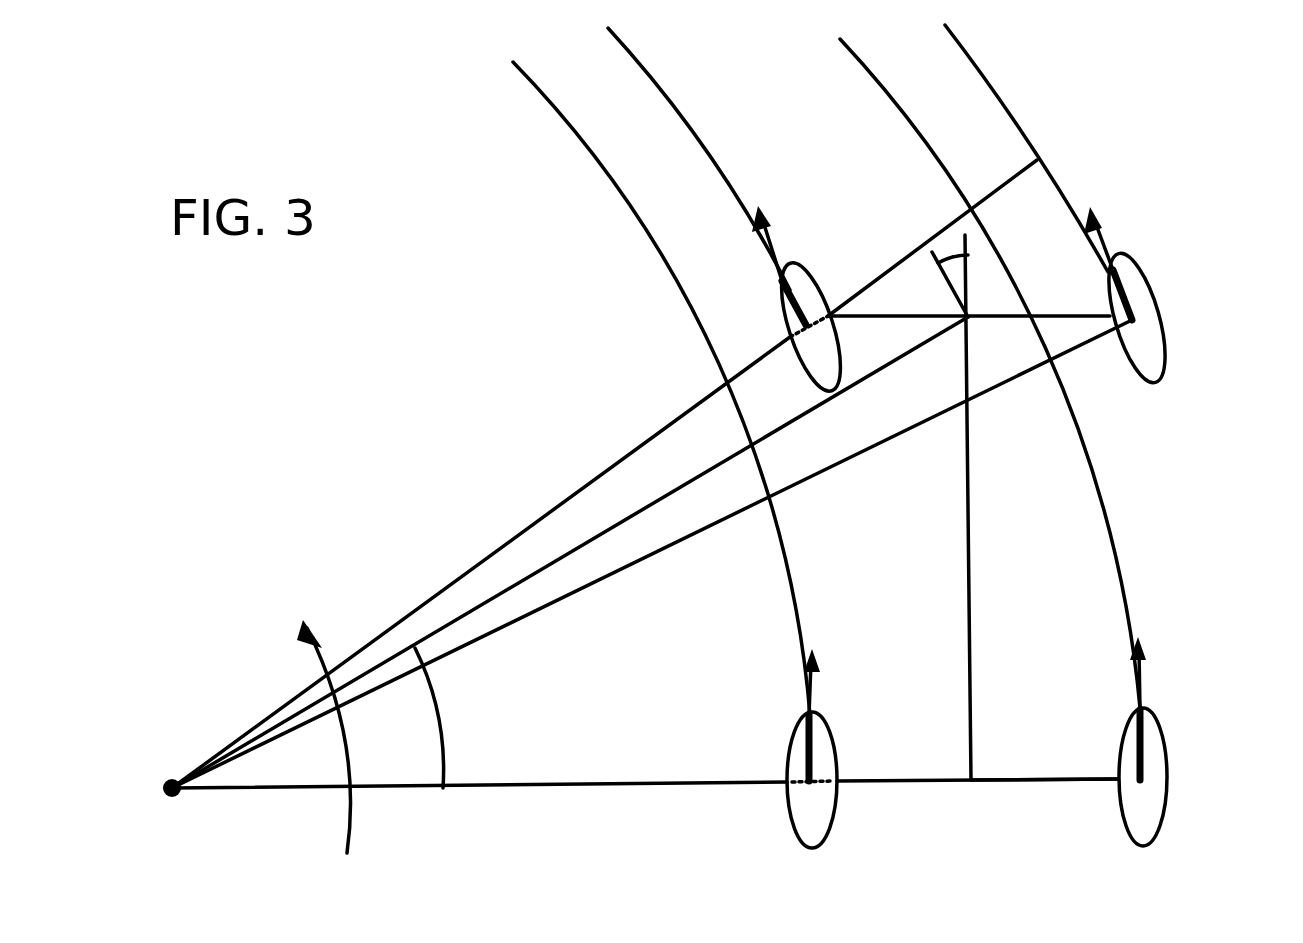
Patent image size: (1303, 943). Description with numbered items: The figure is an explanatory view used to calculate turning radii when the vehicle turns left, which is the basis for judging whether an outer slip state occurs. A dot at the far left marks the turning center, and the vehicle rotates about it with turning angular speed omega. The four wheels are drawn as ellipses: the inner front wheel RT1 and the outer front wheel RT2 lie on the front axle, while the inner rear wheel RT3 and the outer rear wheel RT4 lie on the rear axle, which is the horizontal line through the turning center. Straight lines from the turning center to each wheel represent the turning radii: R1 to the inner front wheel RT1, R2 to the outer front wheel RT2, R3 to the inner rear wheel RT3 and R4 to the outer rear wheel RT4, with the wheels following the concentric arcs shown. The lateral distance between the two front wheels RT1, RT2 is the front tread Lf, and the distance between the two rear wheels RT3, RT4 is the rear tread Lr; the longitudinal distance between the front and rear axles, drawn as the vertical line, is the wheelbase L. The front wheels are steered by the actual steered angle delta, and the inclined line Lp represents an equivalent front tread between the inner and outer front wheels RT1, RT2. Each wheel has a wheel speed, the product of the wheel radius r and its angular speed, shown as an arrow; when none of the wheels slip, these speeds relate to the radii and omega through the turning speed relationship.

The inner front wheel RT1 is at (781, 291).
The outer front wheel RT2 is at (1147, 292).
The inner rear wheel RT3 is at (828, 823).
The outer rear wheel RT4 is at (1152, 833).
The turning radius of inner front wheel R1 is at (500, 549).
The turning radius of outer front wheel R2 is at (652, 554).
The turning radius of inner rear wheel R3 is at (502, 766).
The turning radius of outer rear wheel R4 is at (977, 753).
The wheelbase L is at (985, 507).
The front tread Lf is at (969, 296).
The rear tread Lr is at (1034, 803).
The equivalent front tread Lp is at (932, 238).